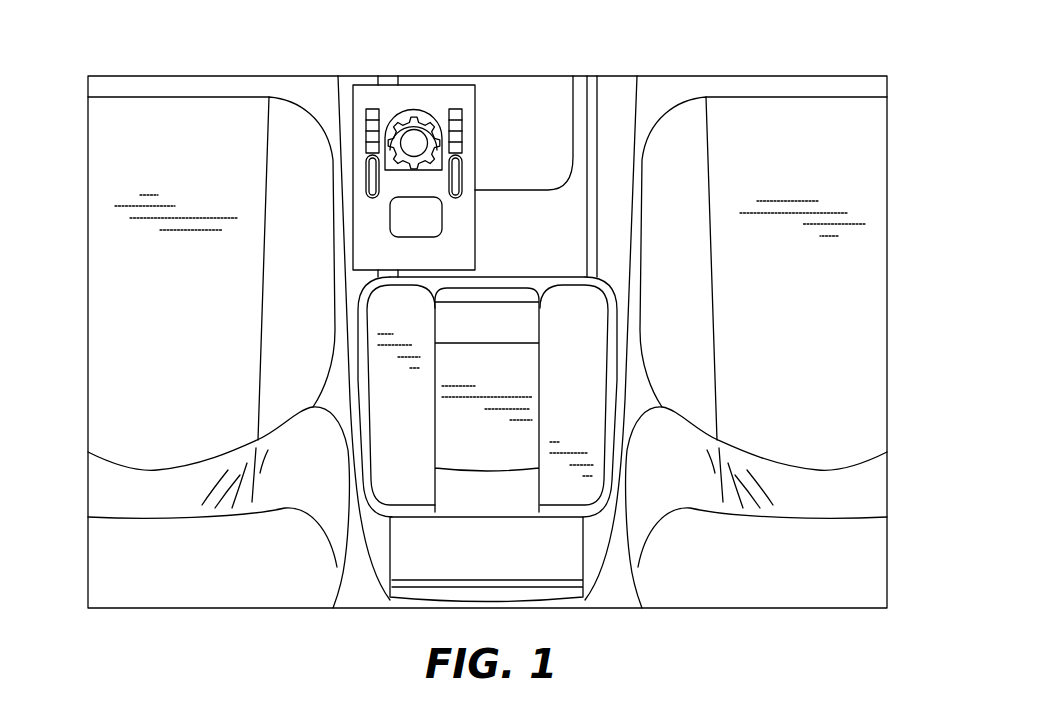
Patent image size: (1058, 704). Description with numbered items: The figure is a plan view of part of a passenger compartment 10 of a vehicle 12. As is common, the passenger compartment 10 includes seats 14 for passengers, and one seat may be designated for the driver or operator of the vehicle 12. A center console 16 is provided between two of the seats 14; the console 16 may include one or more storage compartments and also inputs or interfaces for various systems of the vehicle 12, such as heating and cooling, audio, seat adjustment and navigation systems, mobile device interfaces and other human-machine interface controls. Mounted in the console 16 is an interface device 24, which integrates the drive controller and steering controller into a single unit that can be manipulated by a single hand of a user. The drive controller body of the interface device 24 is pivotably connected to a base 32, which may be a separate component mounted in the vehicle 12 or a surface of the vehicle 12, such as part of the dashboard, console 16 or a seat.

The passenger compartment 10 is at (897, 195).
The vehicle 12 is at (917, 96).
The seats 14 is at (100, 259).
The center console 16 is at (612, 125).
The interface device 24 is at (438, 102).
The base 32 is at (407, 100).